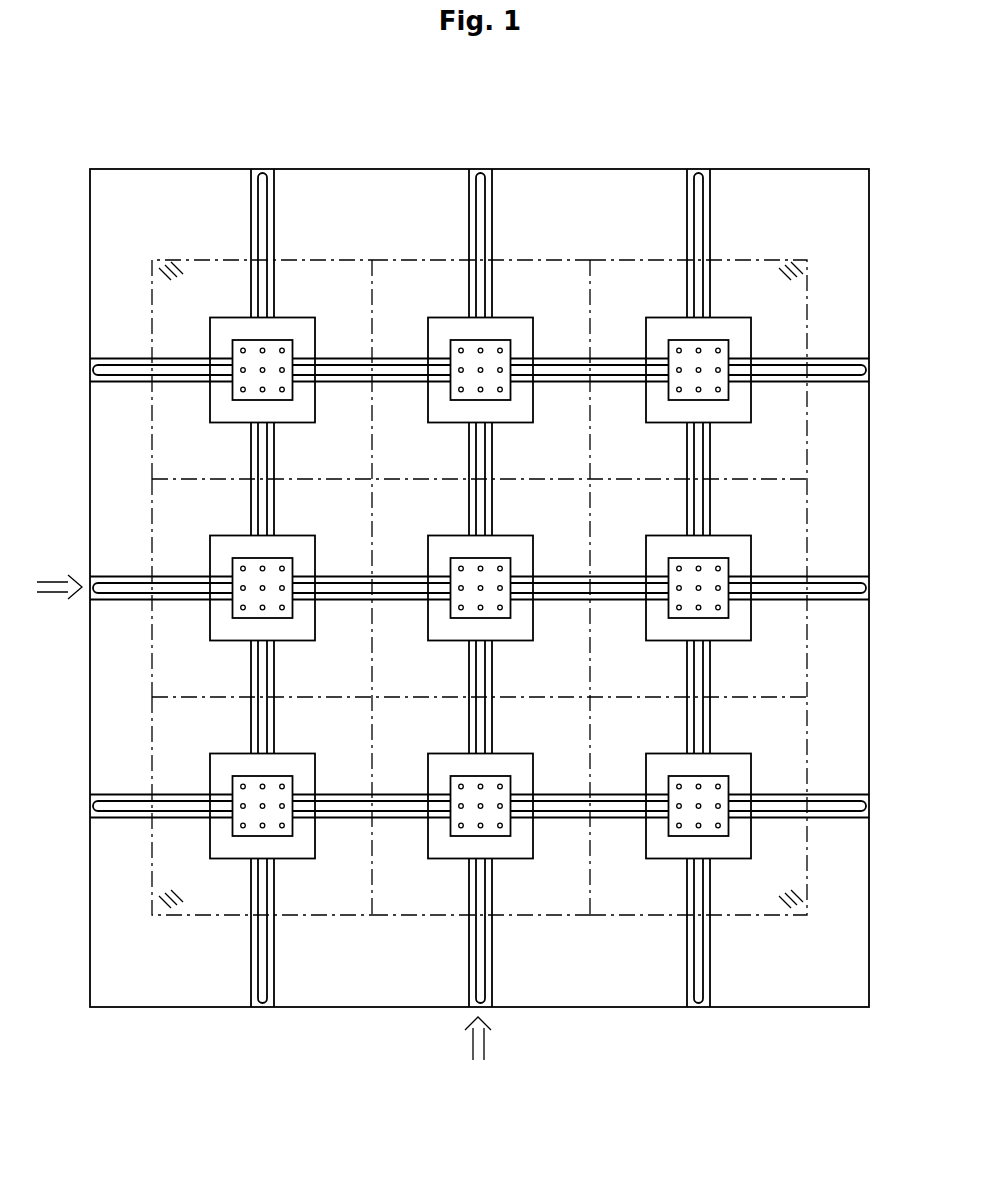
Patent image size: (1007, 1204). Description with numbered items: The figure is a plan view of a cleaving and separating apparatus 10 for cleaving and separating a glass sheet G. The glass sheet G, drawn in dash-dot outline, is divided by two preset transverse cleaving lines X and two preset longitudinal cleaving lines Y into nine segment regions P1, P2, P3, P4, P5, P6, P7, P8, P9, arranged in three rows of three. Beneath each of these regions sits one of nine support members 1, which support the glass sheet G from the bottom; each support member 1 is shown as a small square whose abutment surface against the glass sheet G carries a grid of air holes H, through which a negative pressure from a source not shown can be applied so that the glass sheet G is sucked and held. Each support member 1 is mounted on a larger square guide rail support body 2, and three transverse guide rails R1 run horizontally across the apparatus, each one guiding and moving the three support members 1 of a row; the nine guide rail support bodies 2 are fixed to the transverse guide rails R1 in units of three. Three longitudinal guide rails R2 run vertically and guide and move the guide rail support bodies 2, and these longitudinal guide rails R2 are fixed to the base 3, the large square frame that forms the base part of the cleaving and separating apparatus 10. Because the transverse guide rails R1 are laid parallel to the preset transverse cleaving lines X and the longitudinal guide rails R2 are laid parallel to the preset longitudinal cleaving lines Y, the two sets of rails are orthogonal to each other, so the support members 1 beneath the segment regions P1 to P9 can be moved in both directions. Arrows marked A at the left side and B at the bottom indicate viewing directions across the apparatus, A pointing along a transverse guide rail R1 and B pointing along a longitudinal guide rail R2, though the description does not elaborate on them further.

The support member 1 is at (280, 400).
The guide rail support body 2 is at (210, 402).
The base 3 is at (154, 168).
The cleaving and separating apparatus 10 is at (837, 150).
The air holes H is at (282, 348).
The transverse guide rail R1 is at (838, 383).
The longitudinal guide rail R2 is at (276, 205).
The glass sheet G is at (152, 398).
The preset transverse cleaving line X is at (170, 479).
The preset longitudinal cleaving line Y is at (372, 884).
The viewing direction A is at (59, 599).
The viewing direction B is at (467, 1040).
The segment region P1 is at (178, 319).
The segment region P2 is at (549, 280).
The segment region P3 is at (619, 280).
The segment region P4 is at (178, 544).
The segment region P5 is at (396, 500).
The segment region P6 is at (777, 507).
The segment region P7 is at (178, 855).
The segment region P8 is at (540, 893).
The segment region P9 is at (777, 730).